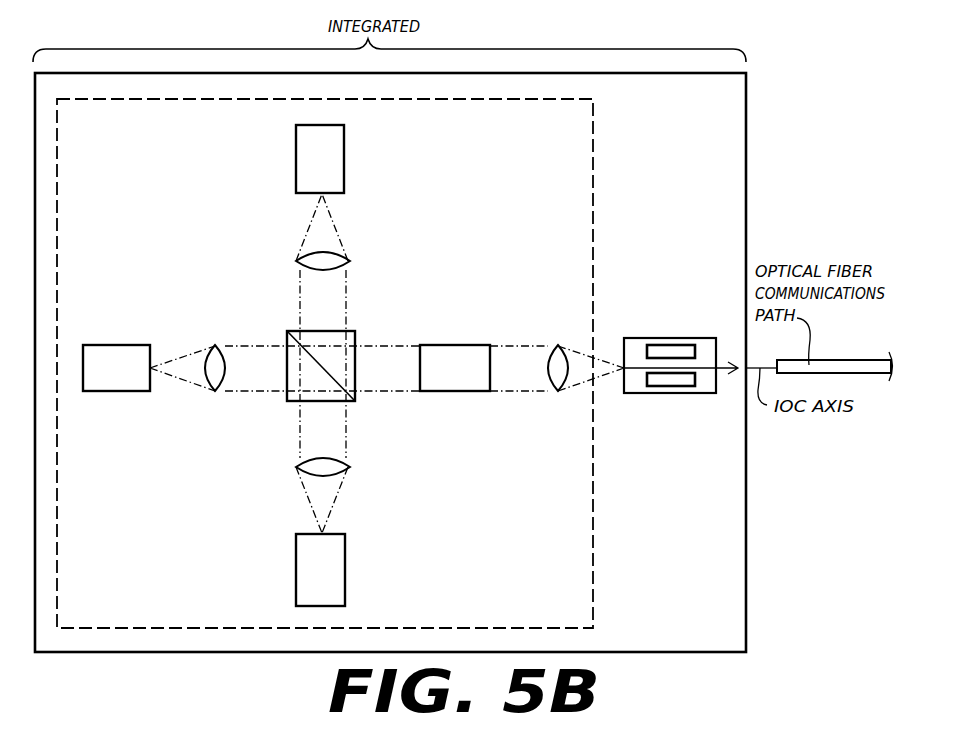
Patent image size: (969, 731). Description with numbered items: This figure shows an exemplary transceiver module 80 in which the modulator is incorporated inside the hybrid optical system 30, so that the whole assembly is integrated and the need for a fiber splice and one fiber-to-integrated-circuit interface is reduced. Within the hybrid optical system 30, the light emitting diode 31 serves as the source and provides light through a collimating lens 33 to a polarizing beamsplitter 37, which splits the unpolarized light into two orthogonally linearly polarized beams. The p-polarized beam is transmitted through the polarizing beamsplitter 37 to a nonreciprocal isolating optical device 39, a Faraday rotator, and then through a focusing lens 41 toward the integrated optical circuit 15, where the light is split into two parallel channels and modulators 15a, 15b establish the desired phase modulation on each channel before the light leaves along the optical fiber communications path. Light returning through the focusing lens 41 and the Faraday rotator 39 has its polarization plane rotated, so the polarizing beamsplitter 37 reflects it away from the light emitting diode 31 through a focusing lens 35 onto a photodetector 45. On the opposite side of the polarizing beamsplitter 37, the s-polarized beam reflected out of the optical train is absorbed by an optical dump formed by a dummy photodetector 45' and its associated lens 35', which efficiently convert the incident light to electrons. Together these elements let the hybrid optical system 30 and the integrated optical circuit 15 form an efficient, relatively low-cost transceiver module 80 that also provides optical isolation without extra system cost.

The transceiver module 80 is at (748, 125).
The hybrid optical system 30 is at (107, 99).
The light emitting diode 31 is at (116, 345).
The collimating lens 33 is at (218, 345).
The nonreciprocal isolating optical device 39 is at (355, 331).
The polarizing beamsplitter 37 is at (450, 345).
The focusing lens 41 is at (562, 347).
The focusing lens 35 is at (347, 456).
The lens 35' is at (349, 250).
The photodetector 45 is at (344, 570).
The dummy photodetector 45' is at (343, 159).
The integrated optical circuit 15 is at (676, 370).
The modulator 15a is at (668, 352).
The modulator 15b is at (678, 386).